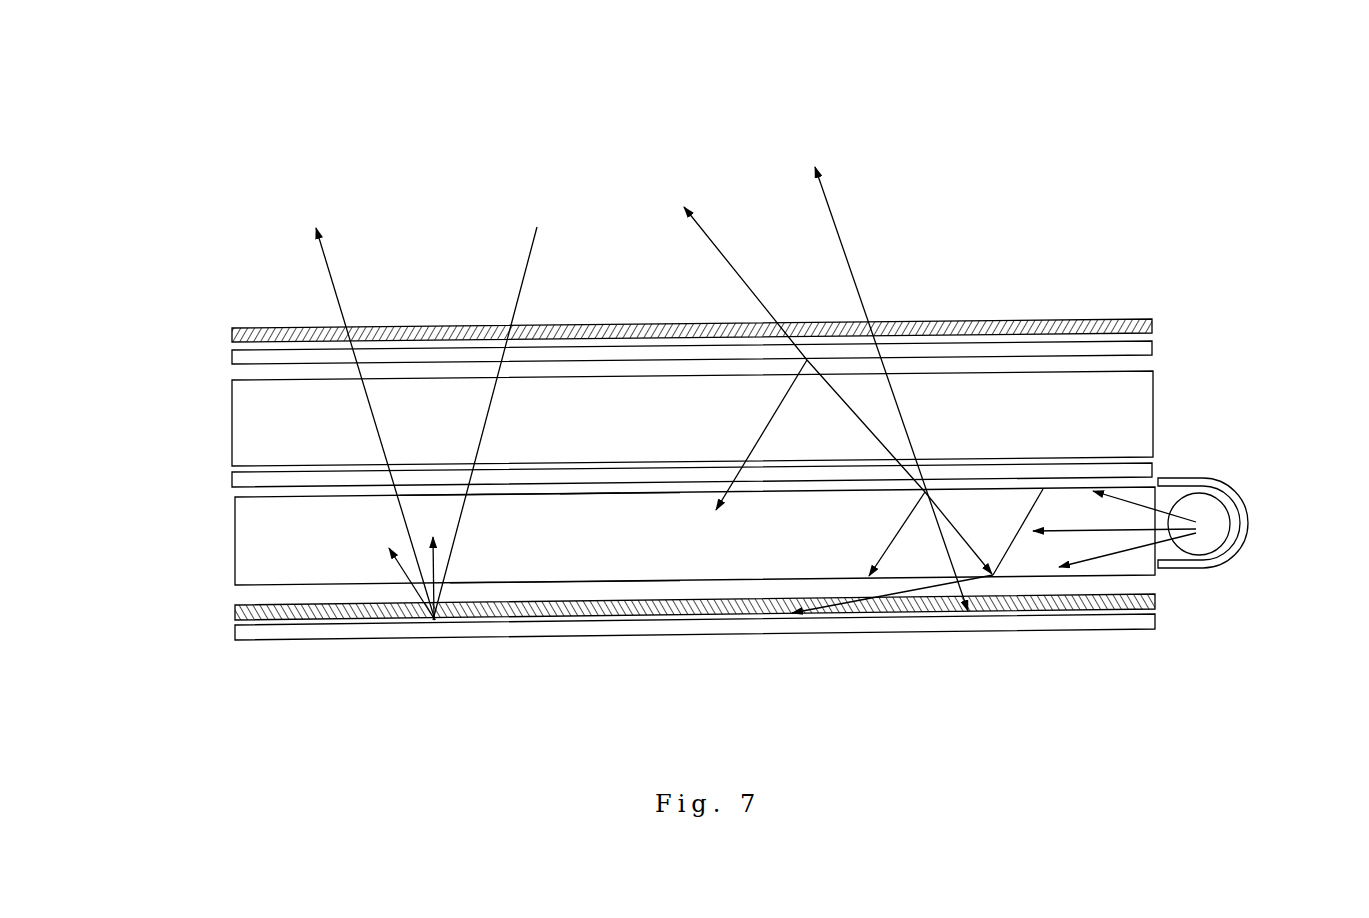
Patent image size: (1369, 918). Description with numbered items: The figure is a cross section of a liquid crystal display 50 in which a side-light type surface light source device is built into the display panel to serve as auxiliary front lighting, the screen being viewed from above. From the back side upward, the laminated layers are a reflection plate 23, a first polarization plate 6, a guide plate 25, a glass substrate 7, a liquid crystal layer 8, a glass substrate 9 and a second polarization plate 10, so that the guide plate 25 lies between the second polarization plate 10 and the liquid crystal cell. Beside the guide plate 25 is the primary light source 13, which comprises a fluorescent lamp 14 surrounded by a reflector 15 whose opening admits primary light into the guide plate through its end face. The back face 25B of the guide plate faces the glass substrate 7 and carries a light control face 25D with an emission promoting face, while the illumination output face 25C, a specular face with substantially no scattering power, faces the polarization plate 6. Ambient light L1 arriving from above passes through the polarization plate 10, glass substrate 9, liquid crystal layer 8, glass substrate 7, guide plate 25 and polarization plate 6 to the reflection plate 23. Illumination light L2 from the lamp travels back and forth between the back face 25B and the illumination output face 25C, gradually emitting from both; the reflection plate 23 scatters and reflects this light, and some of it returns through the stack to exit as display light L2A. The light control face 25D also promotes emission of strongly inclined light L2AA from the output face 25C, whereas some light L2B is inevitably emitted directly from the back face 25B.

The liquid crystal display 50 is at (246, 63).
The second polarization plate 10 is at (692, 287).
The glass substrate 9 is at (692, 298).
The liquid crystal layer 8 is at (738, 412).
The glass substrate 7 is at (740, 456).
The first polarization plate 6 is at (736, 627).
The primary light source 13 is at (1253, 487).
The fluorescent lamp 14 is at (1258, 513).
The reflector 15 is at (1242, 544).
The guide plate 25 is at (647, 557).
The light control face 25D is at (513, 491).
The back face 25B is at (570, 492).
The illumination output face 25C is at (565, 650).
The reflection plate 23 is at (695, 655).
The ambient light L1 is at (426, 419).
The illumination light L2 is at (1114, 583).
The illumination light contributing to display L2A is at (891, 389).
The illumination light emitted by light control face promotion L2AA is at (892, 644).
The illumination light directly emitted from back face L2B is at (824, 391).